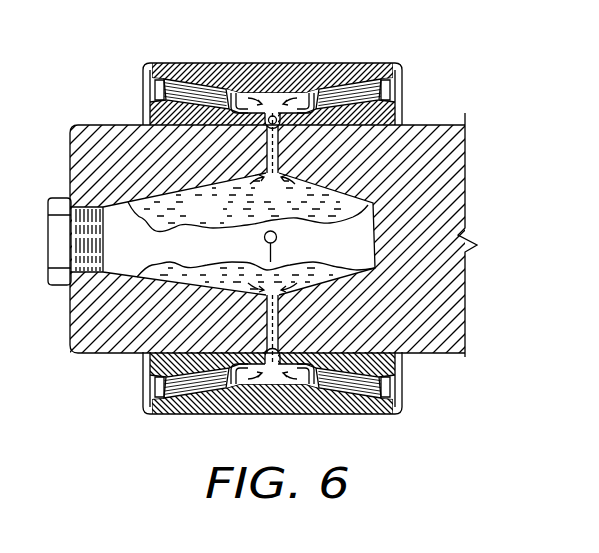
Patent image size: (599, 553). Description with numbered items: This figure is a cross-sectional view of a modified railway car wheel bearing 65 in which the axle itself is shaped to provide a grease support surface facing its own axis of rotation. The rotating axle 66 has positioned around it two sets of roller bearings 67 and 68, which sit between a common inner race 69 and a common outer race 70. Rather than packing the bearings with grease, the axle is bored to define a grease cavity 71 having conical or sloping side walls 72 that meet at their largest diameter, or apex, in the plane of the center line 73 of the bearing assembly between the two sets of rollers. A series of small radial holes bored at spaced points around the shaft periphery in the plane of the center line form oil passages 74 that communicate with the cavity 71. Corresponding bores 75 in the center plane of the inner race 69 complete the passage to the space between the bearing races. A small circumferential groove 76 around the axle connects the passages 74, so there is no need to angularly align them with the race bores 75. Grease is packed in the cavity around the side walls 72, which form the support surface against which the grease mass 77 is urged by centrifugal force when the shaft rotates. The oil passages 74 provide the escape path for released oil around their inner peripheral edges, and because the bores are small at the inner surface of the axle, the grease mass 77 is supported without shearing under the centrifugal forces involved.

The bearing 65 is at (417, 78).
The rotating axle 66 is at (467, 157).
The roller bearings 67 is at (335, 83).
The roller bearings 68 is at (200, 70).
The common inner race 69 is at (398, 104).
The common outer race 70 is at (333, 76).
The grease cavity 71 is at (362, 254).
The sloping side walls 72 is at (172, 209).
The center line 73 is at (268, 250).
The oil passages 74 is at (268, 151).
The bores 75 is at (279, 358).
The circumferential groove 76 is at (265, 345).
The grease mass 77 is at (177, 263).